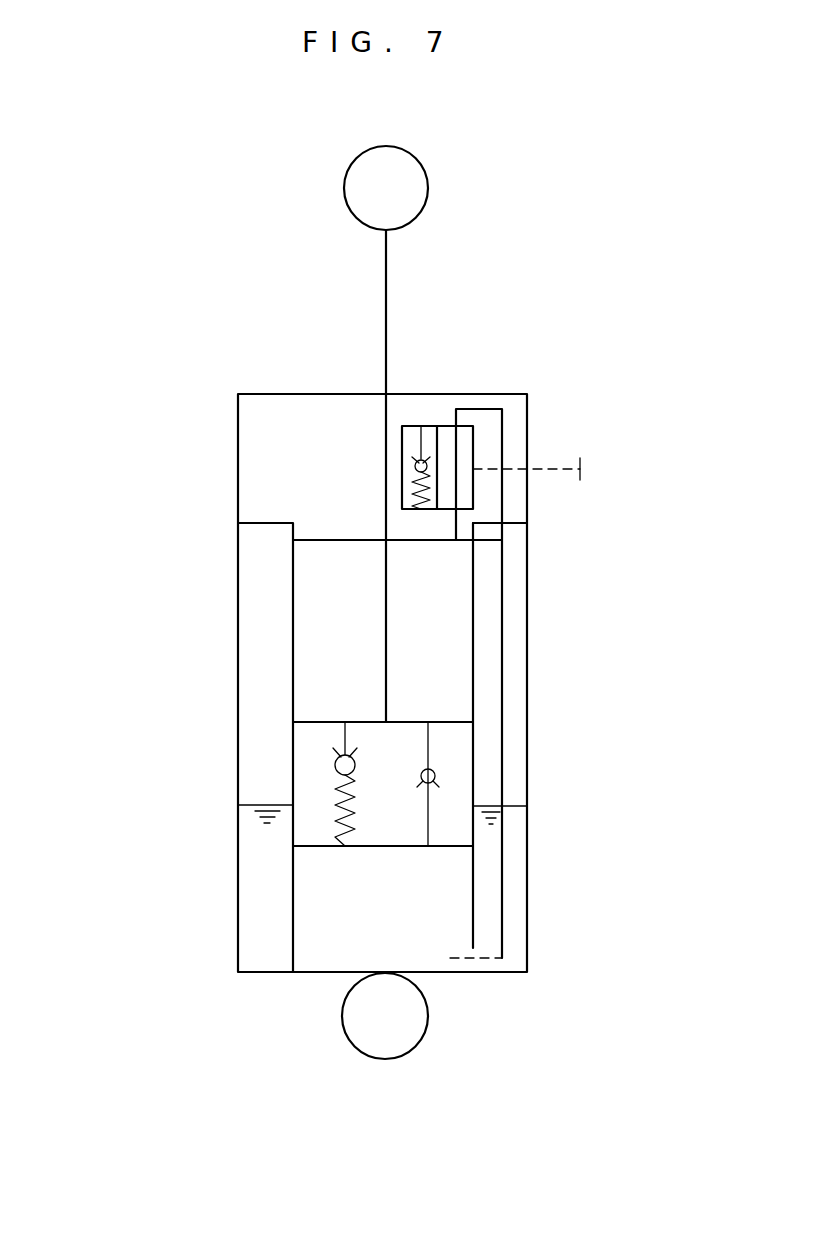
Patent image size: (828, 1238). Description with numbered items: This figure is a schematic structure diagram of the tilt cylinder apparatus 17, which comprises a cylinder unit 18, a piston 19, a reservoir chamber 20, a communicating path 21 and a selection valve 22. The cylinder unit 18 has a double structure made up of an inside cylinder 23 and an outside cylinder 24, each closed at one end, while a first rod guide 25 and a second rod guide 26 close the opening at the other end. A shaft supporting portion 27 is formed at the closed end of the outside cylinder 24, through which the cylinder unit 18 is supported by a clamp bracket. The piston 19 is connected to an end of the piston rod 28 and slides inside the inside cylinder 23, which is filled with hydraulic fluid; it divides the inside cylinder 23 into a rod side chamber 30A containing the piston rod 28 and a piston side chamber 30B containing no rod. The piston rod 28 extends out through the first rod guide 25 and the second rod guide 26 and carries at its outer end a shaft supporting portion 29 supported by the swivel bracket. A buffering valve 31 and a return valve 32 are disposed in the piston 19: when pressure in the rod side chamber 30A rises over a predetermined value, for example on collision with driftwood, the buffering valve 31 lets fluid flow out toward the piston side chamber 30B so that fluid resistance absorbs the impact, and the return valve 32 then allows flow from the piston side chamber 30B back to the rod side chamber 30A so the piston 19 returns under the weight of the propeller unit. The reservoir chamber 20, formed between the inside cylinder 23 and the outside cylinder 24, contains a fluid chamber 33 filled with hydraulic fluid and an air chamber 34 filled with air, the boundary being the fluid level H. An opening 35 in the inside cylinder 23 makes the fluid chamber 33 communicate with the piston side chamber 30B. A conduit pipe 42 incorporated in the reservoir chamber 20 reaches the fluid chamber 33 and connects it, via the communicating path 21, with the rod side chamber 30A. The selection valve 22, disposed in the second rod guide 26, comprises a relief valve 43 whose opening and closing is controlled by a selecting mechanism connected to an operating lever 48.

The tilt cylinder apparatus 17 is at (348, 612).
The cylinder unit 18 is at (553, 625).
The piston 19 is at (466, 748).
The reservoir chamber 20 is at (200, 820).
The communicating path 21 is at (502, 424).
The selection valve 22 is at (475, 490).
The inside cylinder 23 is at (503, 672).
The outside cylinder 24 is at (528, 876).
The first rod guide 25 is at (315, 683).
The second rod guide 26 is at (238, 433).
The shaft supporting portion 27 is at (428, 1028).
The piston rod 28 is at (386, 275).
The shaft supporting portion 29 is at (427, 176).
The rod side chamber 30A is at (310, 588).
The piston side chamber 30B is at (310, 918).
The buffering valve 31 is at (335, 752).
The return valve 32 is at (420, 778).
The fluid chamber 33 is at (219, 841).
The air chamber 34 is at (250, 776).
The opening 35 is at (473, 948).
The conduit pipe 42 is at (503, 570).
The relief valve 43 is at (415, 464).
The operating lever 48 is at (582, 462).
The fluid level H is at (515, 806).